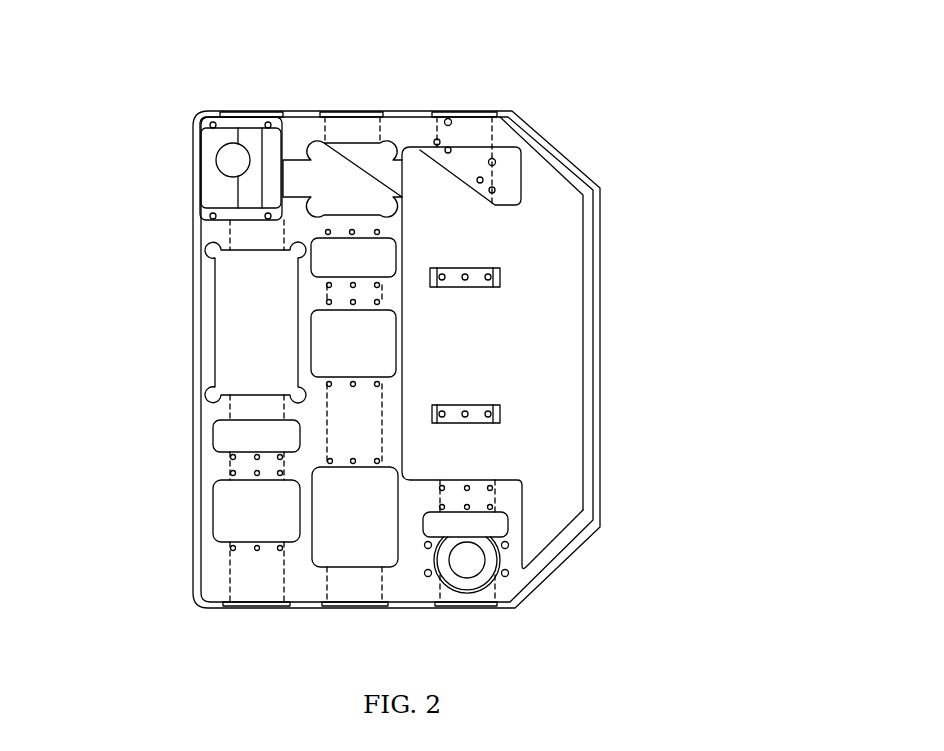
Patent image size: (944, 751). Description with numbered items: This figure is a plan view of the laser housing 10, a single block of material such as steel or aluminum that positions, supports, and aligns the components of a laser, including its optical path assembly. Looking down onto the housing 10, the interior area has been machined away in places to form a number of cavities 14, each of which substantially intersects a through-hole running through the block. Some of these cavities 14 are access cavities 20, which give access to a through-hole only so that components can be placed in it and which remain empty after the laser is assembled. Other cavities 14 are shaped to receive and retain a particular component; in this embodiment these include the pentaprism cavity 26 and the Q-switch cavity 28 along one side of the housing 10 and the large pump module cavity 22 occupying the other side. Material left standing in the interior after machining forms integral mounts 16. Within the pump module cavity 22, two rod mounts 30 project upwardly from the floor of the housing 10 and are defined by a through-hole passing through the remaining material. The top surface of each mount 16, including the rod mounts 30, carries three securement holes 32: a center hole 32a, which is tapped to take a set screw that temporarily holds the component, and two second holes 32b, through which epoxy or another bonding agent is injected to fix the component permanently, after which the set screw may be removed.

The laser housing 10 is at (679, 109).
The pentaprism cavity 26 is at (213, 183).
The Q-switch cavity 28 is at (233, 313).
The access cavities 20 is at (238, 434).
The cavities 14 is at (234, 498).
The pump module cavity 22 is at (563, 385).
The securement holes 32 is at (500, 238).
The center hole 32a is at (472, 267).
The second holes 32b is at (500, 273).
The integral mounts 16 is at (610, 296).
The rod mounts 30 is at (485, 431).